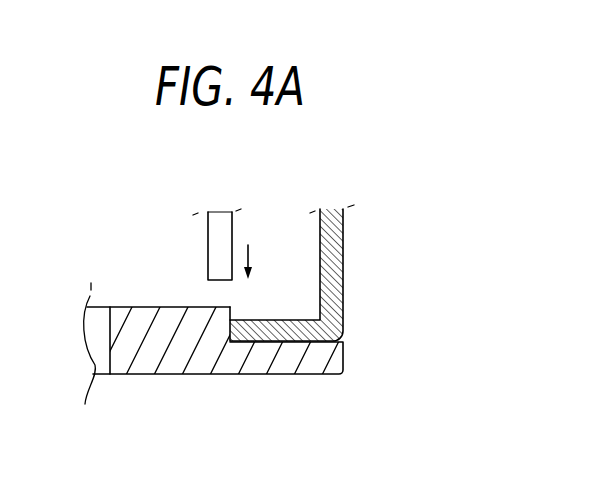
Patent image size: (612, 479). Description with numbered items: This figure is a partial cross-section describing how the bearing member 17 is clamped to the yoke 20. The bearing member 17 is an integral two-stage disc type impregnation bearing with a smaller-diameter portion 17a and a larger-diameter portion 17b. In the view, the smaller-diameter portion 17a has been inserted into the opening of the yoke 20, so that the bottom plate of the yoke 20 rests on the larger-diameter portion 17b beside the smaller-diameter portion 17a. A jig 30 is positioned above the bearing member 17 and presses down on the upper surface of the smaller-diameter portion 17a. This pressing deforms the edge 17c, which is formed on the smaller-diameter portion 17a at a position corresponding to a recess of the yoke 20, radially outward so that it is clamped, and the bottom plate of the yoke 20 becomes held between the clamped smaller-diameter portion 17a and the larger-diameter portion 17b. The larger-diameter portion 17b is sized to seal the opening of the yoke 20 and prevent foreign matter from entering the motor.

The jig 30 is at (213, 242).
The yoke 20 is at (340, 270).
The bearing member 17 is at (267, 334).
The smaller-diameter portion 17a is at (133, 316).
The larger-diameter portion 17b is at (278, 362).
The edge 17c is at (230, 306).